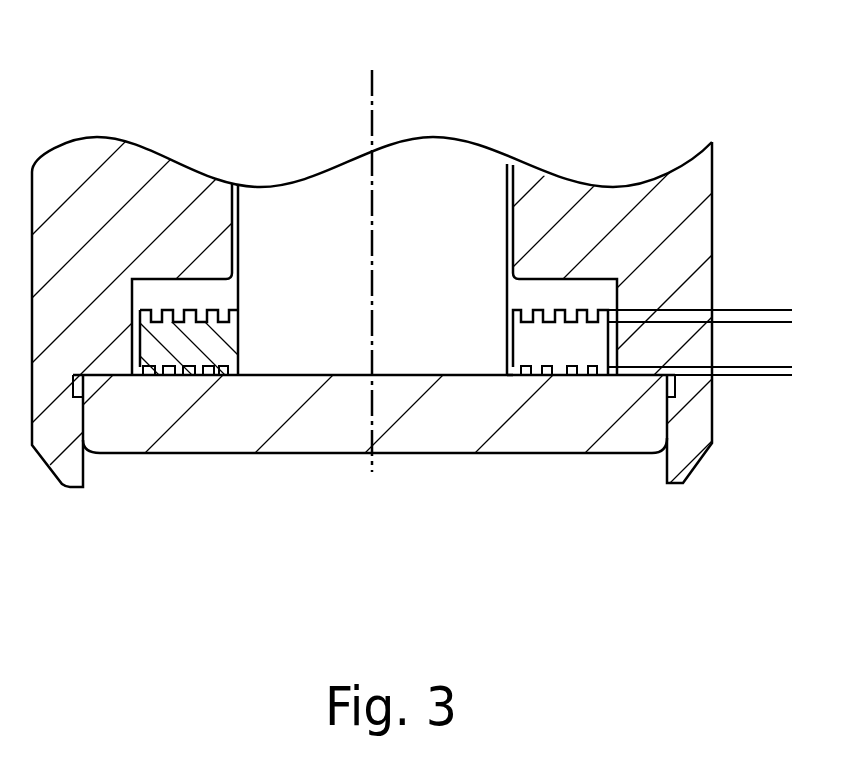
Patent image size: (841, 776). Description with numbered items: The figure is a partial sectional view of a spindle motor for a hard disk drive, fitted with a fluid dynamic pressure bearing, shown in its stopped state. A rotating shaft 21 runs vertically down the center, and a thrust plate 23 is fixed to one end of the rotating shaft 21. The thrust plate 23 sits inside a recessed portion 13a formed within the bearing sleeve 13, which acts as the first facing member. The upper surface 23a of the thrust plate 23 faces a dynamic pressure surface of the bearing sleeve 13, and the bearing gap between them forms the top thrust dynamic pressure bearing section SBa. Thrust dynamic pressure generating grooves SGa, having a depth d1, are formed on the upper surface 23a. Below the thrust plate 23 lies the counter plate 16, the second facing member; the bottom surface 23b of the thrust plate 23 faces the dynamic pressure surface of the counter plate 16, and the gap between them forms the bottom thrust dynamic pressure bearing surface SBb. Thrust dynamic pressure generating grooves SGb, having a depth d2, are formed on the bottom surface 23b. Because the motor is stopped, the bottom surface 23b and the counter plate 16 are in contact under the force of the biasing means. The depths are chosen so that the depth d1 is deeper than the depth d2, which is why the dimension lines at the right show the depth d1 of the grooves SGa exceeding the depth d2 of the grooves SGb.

The bearing sleeve 13 is at (137, 162).
The recessed portion 13a is at (144, 287).
The rotating shaft 21 is at (327, 213).
The thrust plate 23 is at (202, 358).
The upper surface 23a is at (210, 310).
The bottom surface 23b is at (196, 380).
The counter plate 16 is at (145, 433).
The top thrust dynamic pressure bearing section SBa is at (533, 292).
The bottom thrust dynamic pressure bearing surface SBb is at (535, 378).
The thrust dynamic pressure generating grooves SGa is at (549, 312).
The thrust dynamic pressure generating grooves SGb is at (549, 377).
The depth d1 is at (772, 367).
The depth d2 is at (772, 405).